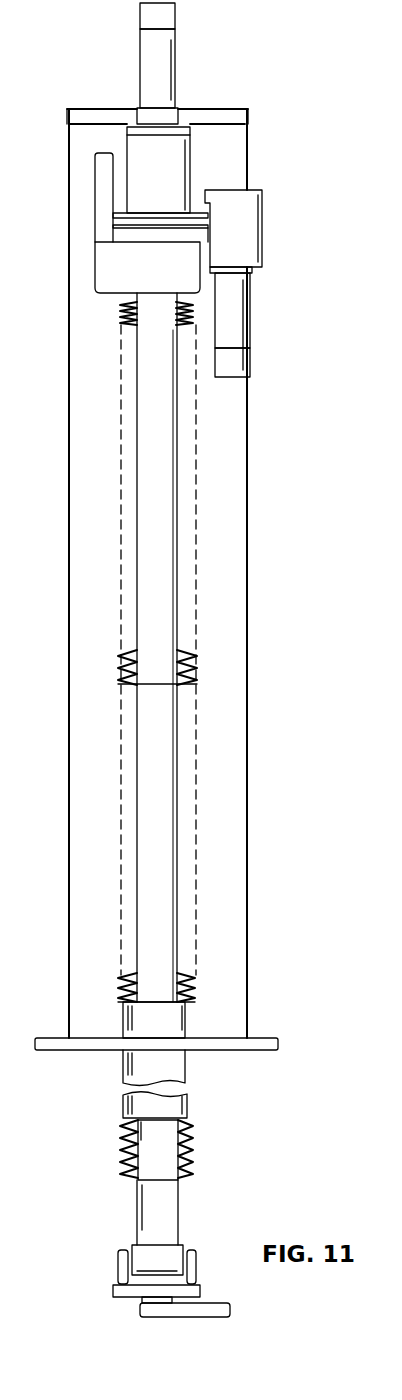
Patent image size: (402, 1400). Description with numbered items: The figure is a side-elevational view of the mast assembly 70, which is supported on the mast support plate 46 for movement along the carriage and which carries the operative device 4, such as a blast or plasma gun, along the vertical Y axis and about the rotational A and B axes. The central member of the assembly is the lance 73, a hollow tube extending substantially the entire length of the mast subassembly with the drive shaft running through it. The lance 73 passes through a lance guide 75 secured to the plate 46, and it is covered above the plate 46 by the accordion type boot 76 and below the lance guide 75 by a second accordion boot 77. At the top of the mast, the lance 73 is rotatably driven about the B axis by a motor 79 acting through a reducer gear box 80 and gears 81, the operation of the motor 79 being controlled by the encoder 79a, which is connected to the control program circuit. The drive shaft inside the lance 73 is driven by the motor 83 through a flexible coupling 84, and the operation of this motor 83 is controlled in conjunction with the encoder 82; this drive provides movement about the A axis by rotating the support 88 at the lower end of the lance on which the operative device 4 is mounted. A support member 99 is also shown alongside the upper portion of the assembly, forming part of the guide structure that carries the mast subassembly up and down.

The mast assembly 70 is at (264, 517).
The encoder 82 is at (176, 15).
The motor 83 is at (176, 58).
The flexible coupling 84 is at (188, 150).
The gears 81 is at (140, 212).
The support member 99 is at (101, 197).
The reducer gear box 80 is at (260, 228).
The motor 79 is at (243, 333).
The encoder 79a is at (246, 368).
The accordion type boot 76 is at (127, 316).
The lance 73 is at (175, 472).
The lance guide 75 is at (120, 1070).
The mast support plate 46 is at (200, 1045).
The accordion boot 77 is at (186, 1165).
The support 88 is at (200, 1291).
The operative device 4 is at (213, 1302).